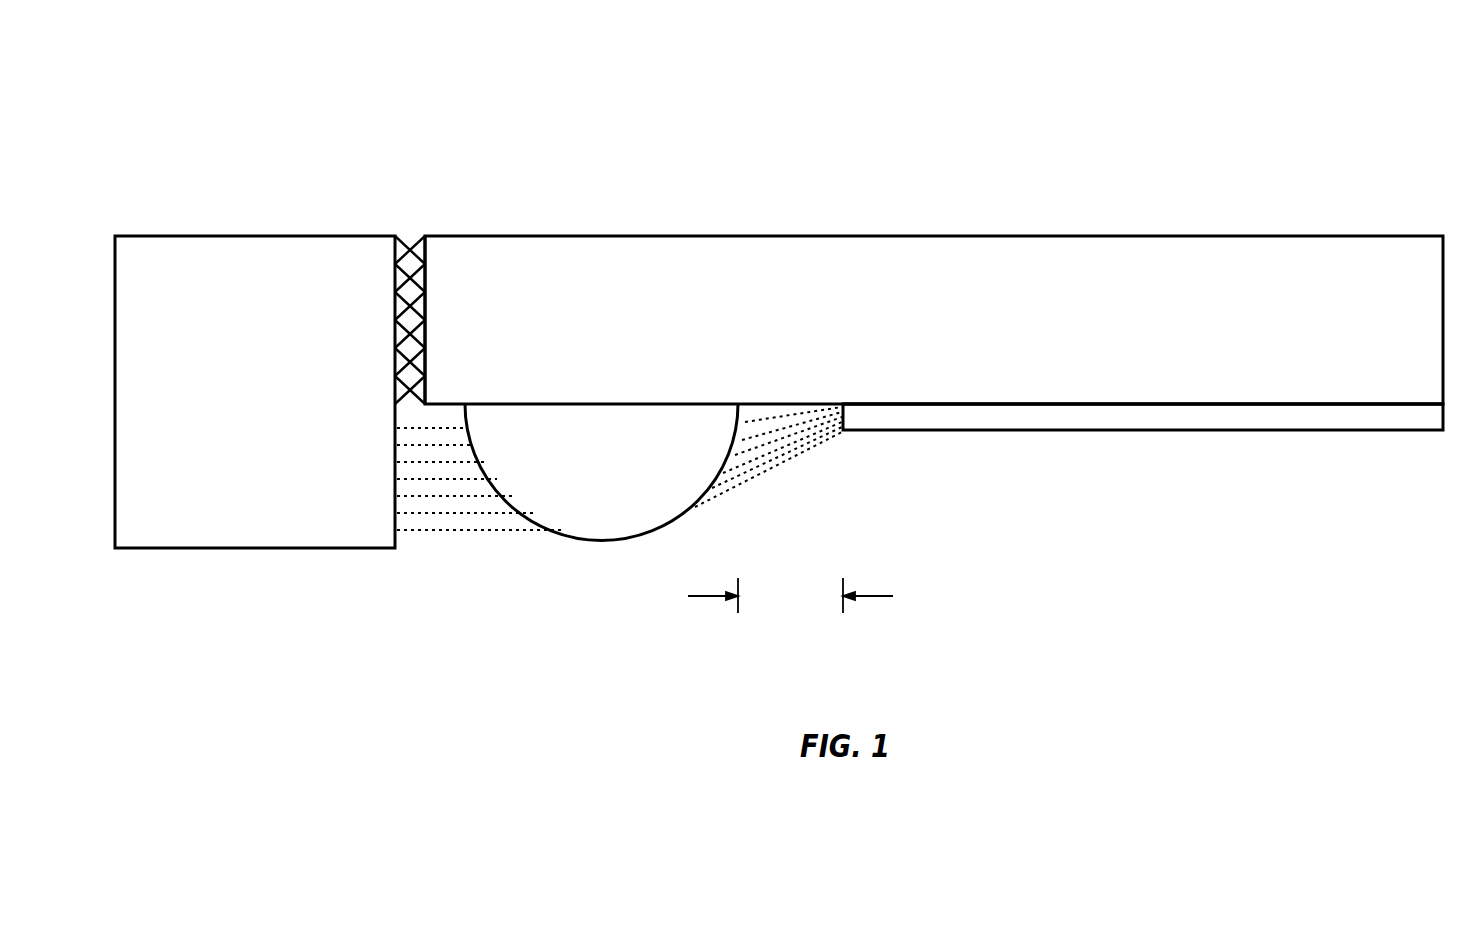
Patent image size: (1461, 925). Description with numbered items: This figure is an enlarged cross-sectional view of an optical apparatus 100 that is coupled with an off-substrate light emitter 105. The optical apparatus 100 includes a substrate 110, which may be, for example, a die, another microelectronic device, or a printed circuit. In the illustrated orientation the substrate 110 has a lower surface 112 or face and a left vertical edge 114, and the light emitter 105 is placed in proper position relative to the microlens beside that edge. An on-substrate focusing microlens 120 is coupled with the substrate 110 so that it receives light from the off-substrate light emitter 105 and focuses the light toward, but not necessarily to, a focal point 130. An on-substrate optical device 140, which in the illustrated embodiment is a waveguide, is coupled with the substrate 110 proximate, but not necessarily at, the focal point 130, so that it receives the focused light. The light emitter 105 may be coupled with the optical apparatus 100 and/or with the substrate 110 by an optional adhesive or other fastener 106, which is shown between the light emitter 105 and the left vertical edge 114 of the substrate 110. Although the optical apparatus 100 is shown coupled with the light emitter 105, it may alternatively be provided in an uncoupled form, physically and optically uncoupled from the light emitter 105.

The optical apparatus 100 is at (621, 111).
The off-substrate light emitter 105 is at (235, 471).
The adhesive or other fastener 106 is at (405, 238).
The substrate 110 is at (951, 361).
The lower surface 112 is at (1248, 403).
The left vertical edge 114 is at (425, 282).
The on-substrate focusing microlens 120 is at (581, 518).
The focal point 130 is at (847, 456).
The on-substrate optical device 140 is at (1187, 430).